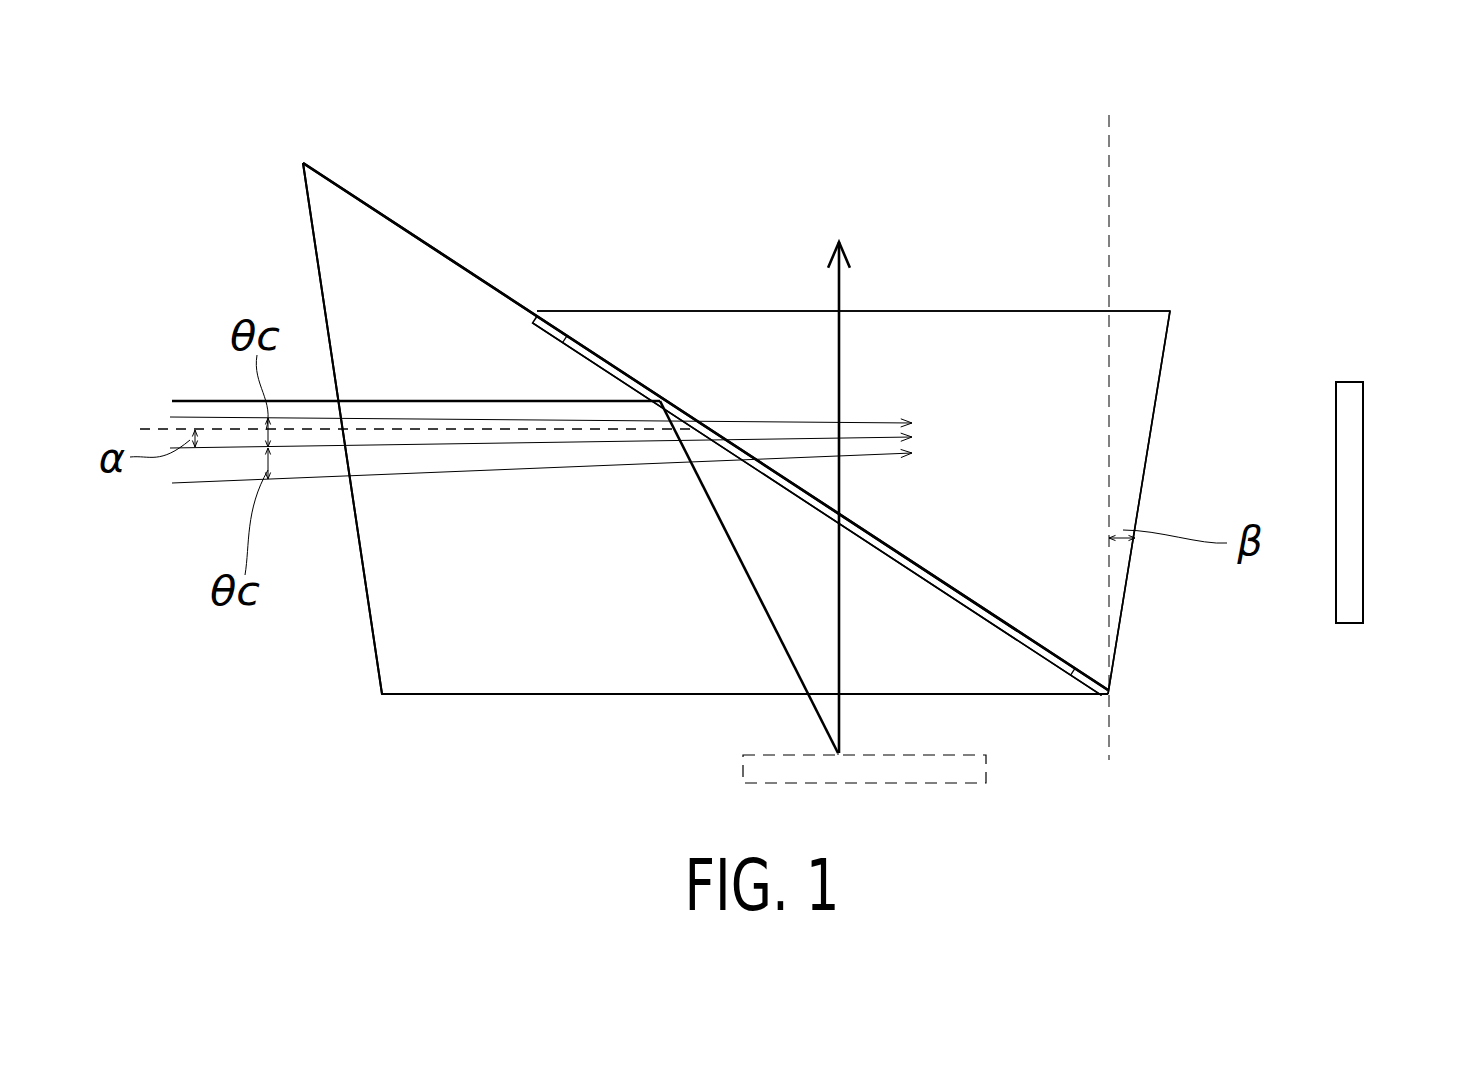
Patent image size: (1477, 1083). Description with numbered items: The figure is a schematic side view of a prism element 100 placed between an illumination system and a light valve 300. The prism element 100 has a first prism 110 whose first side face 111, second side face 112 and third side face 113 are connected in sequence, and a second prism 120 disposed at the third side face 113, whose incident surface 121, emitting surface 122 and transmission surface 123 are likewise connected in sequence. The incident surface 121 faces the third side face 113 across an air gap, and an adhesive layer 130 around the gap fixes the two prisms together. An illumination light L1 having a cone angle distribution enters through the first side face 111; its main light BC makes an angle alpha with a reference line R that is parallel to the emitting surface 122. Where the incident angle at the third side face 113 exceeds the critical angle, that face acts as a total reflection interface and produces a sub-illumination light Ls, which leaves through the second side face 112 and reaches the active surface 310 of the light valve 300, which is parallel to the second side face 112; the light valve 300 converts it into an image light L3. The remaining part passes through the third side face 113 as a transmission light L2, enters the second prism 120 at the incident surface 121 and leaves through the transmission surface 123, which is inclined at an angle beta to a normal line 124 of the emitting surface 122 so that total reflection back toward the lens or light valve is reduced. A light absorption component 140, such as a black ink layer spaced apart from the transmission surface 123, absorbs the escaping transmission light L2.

The prism element 100 is at (170, 79).
The first prism 110 is at (425, 657).
The first side face 111 is at (375, 655).
The second side face 112 is at (515, 695).
The third side face 113 is at (612, 355).
The second prism 120 is at (1026, 340).
The incident surface 121 is at (1053, 657).
The emitting surface 122 is at (937, 311).
The transmission surface 123 is at (1167, 353).
The normal line 124 is at (1109, 140).
The adhesive layer 130 is at (553, 316).
The light absorption component 140 is at (1348, 520).
The light valve 300 is at (913, 775).
The active surface 310 is at (740, 752).
The illumination light L1 is at (193, 385).
The transmission light L2 is at (778, 438).
The image light L3 is at (840, 292).
The sub-illumination light Ls is at (755, 598).
The reference line R is at (148, 427).
The main light BC is at (392, 450).